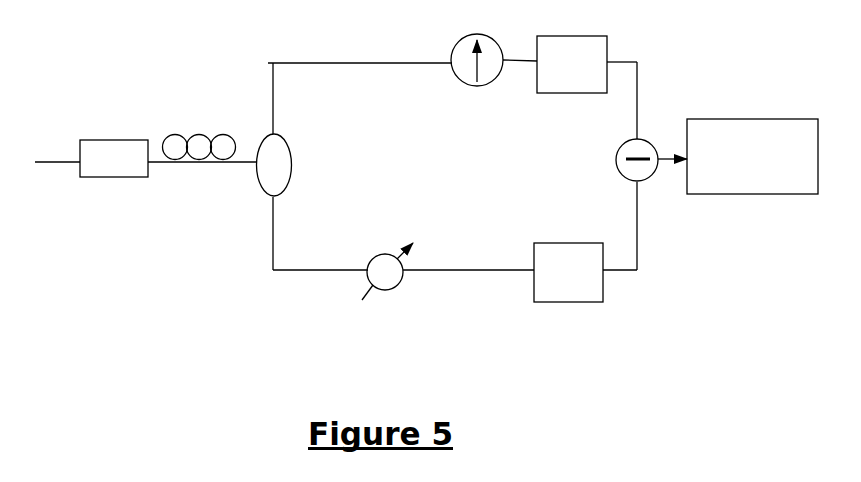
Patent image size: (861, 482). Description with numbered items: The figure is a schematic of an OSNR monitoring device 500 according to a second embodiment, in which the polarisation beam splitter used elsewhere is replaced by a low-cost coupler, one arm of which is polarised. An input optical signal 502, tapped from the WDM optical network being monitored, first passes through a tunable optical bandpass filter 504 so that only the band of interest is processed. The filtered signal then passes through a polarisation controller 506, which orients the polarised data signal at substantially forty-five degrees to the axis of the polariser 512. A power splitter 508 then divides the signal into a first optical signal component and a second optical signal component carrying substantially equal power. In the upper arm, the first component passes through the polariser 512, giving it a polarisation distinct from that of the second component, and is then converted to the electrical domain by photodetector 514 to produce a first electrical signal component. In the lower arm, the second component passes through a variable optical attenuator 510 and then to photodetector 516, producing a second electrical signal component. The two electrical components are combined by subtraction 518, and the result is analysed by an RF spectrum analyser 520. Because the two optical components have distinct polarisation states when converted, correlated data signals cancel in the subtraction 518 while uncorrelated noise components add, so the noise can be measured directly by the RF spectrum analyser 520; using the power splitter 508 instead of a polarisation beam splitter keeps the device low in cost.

The OSNR monitoring device 500 is at (157, 78).
The input optical signal 502 is at (52, 148).
The tunable optical bandpass filter 504 is at (114, 158).
The polarisation controller 506 is at (199, 132).
The power splitter 508 is at (292, 165).
The variable optical attenuator 510 is at (387, 263).
The polariser 512 is at (477, 45).
The photodetector 514 is at (572, 64).
The photodetector 516 is at (568, 272).
The subtraction 518 is at (620, 160).
The RF spectrum analyser 520 is at (752, 156).